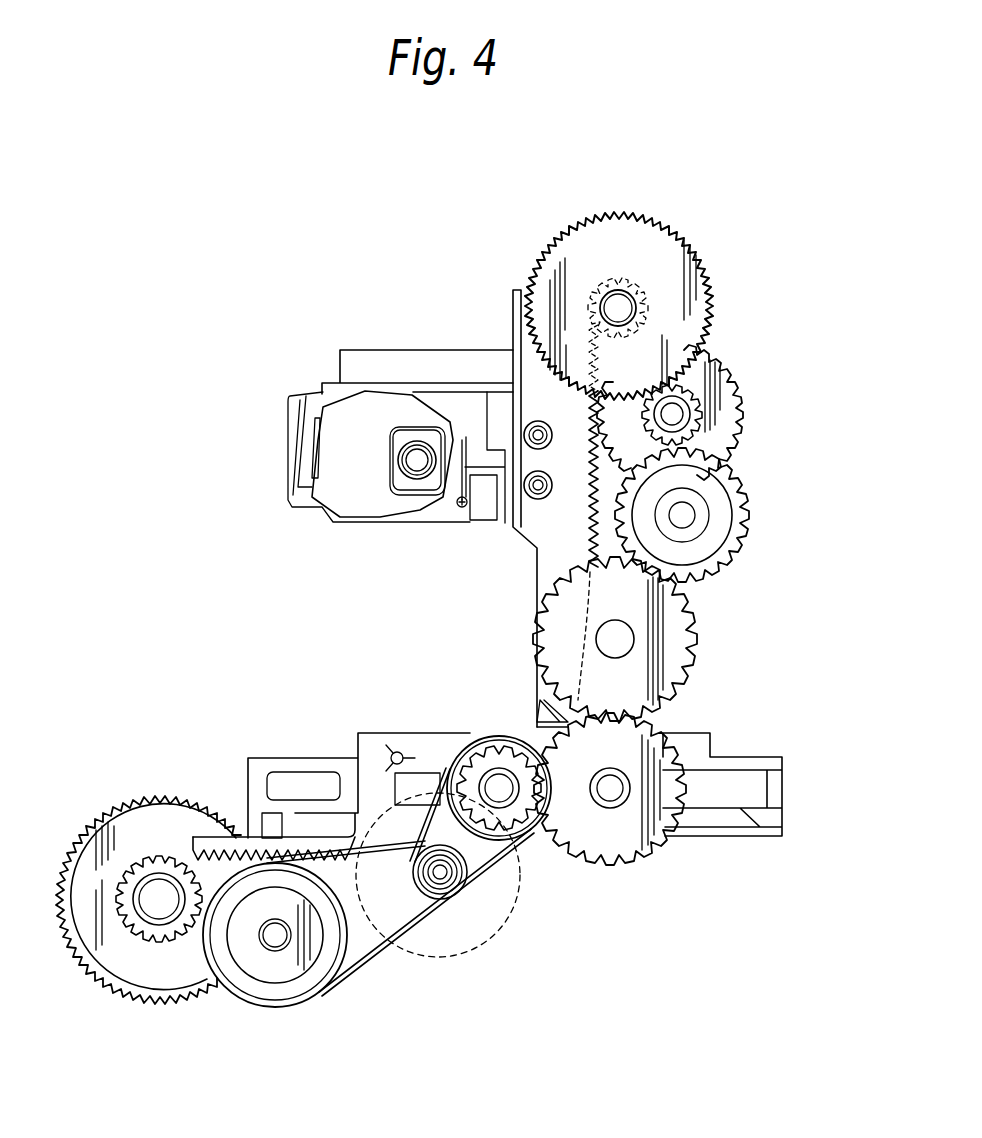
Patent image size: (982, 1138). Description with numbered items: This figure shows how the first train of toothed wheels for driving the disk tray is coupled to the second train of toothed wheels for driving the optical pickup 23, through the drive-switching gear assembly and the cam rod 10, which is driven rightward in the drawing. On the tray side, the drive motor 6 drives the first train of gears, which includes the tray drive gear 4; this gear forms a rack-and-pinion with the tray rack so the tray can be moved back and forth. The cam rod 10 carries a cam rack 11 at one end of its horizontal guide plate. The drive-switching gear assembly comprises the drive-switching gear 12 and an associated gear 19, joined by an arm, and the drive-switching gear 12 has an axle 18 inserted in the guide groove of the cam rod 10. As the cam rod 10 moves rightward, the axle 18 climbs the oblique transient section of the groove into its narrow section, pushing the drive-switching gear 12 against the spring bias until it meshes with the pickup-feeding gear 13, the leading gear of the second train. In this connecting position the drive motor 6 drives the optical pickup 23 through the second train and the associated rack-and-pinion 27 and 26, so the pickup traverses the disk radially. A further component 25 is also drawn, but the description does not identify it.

The tray drive gear 4 is at (160, 945).
The drive motor 6 is at (472, 930).
The cam rod 10 is at (365, 731).
The cam rack 11 is at (195, 840).
The drive-switching gear 12 is at (631, 819).
The pickup-feeding gear 13 is at (697, 630).
The axle 18 is at (627, 788).
The associated gear 19 is at (487, 752).
The optical pickup 23 is at (371, 408).
The compound gear 25 is at (755, 440).
The pinion 26 is at (647, 287).
The rack 27 is at (520, 318).